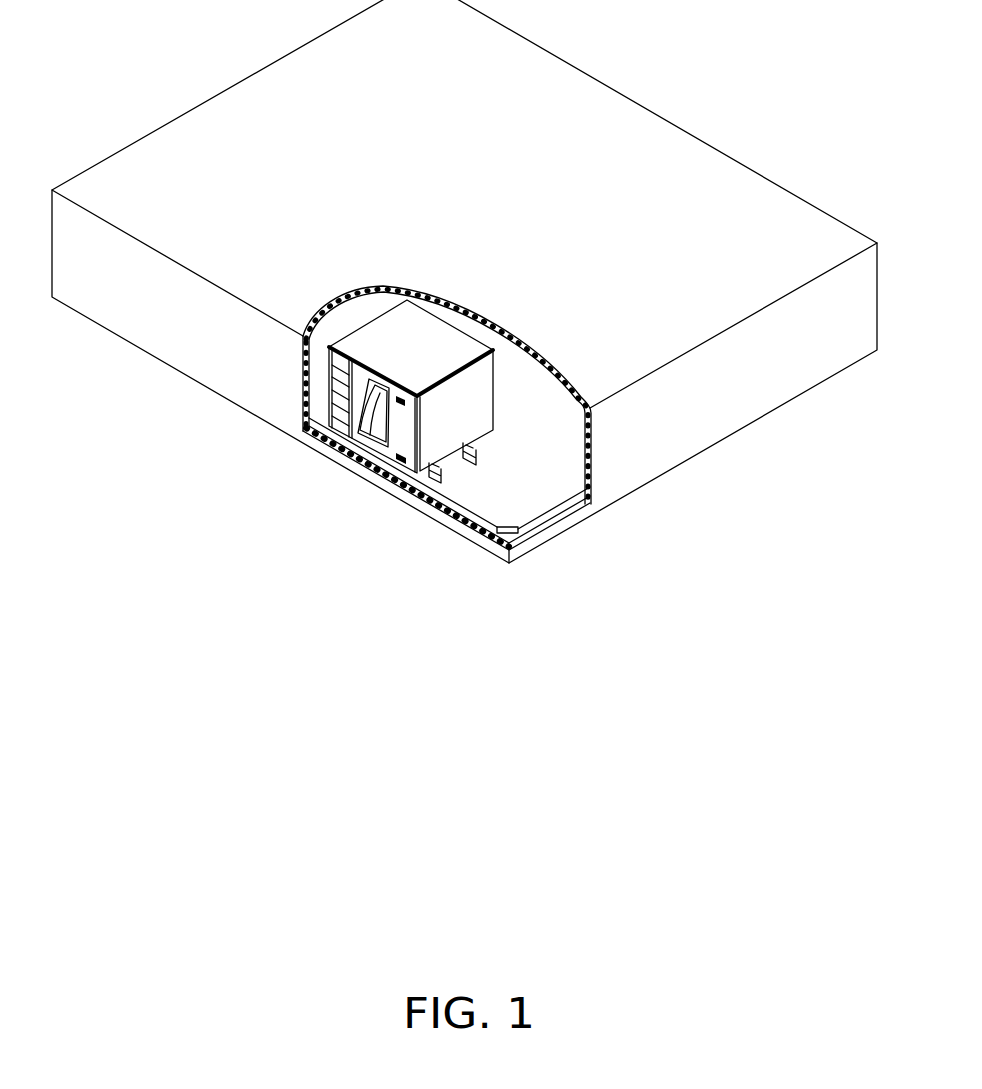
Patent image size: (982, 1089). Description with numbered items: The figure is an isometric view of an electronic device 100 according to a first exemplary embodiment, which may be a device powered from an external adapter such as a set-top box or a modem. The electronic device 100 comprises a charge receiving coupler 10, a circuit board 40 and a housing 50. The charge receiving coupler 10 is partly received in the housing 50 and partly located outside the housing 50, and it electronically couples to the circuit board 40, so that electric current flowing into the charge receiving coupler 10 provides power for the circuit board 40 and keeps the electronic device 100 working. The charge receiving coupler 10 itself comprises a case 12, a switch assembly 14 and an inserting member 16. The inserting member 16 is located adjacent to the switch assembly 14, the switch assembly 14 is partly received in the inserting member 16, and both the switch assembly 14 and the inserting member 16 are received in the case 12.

The electronic device 100 is at (304, 79).
The housing 50 is at (617, 140).
The circuit board 40 is at (527, 487).
The charge receiving coupler 10 is at (440, 602).
The case 12 is at (435, 435).
The switch assembly 14 is at (408, 443).
The inserting member 16 is at (345, 393).